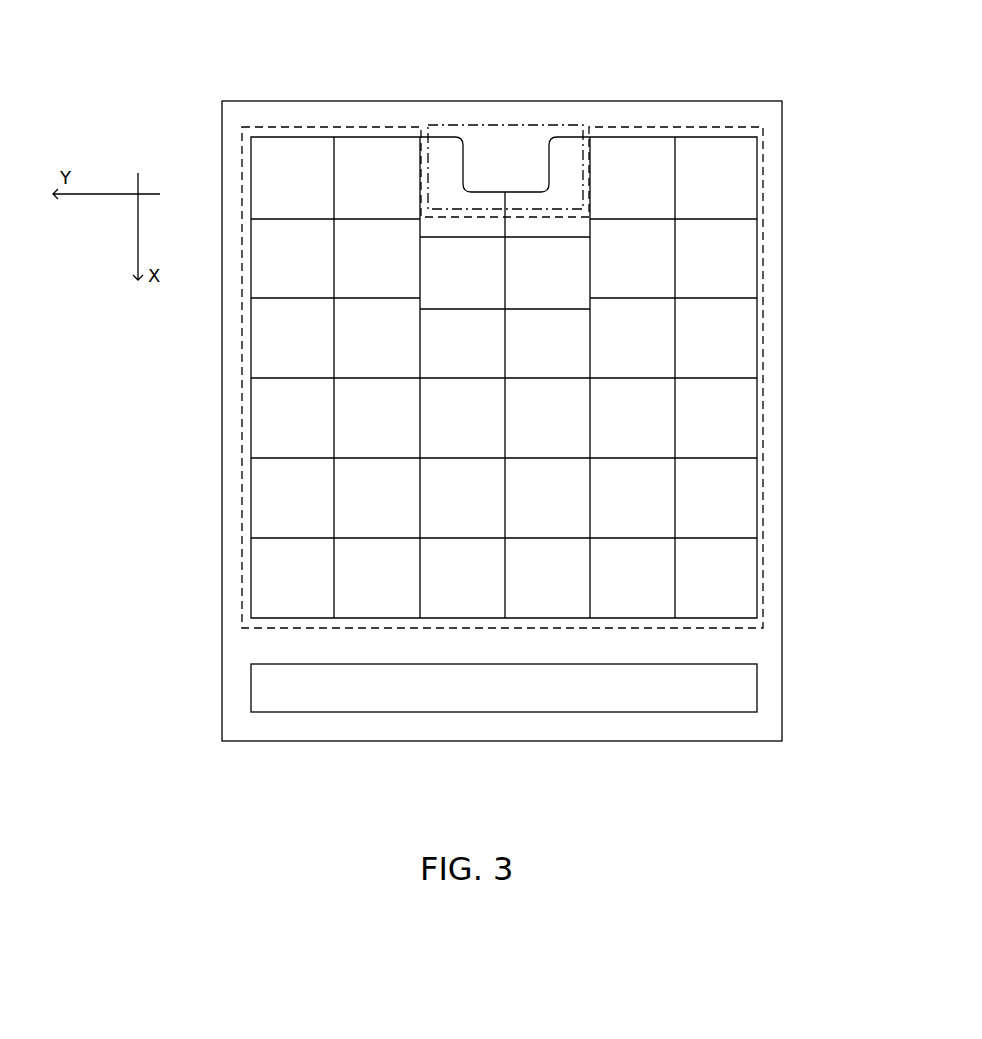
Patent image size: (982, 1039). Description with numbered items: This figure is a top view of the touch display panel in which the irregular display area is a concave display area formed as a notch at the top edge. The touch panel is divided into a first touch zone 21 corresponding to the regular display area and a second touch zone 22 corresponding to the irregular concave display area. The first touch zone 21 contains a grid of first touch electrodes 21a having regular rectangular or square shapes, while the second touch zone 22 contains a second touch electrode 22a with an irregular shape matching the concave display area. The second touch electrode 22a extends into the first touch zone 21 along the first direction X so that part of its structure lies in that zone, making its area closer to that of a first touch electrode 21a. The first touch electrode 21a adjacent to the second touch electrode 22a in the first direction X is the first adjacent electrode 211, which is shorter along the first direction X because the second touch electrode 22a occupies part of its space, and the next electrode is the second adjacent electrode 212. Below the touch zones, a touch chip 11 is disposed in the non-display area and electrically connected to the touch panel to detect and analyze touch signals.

The first touch zone 21 is at (745, 122).
The first touch electrode 21a is at (745, 185).
The second touch zone 22 is at (505, 122).
The second touch electrode 22a is at (422, 178).
The first adjacent electrode 211 is at (430, 270).
The second adjacent electrode 212 is at (430, 345).
The touch chip 11 is at (588, 703).